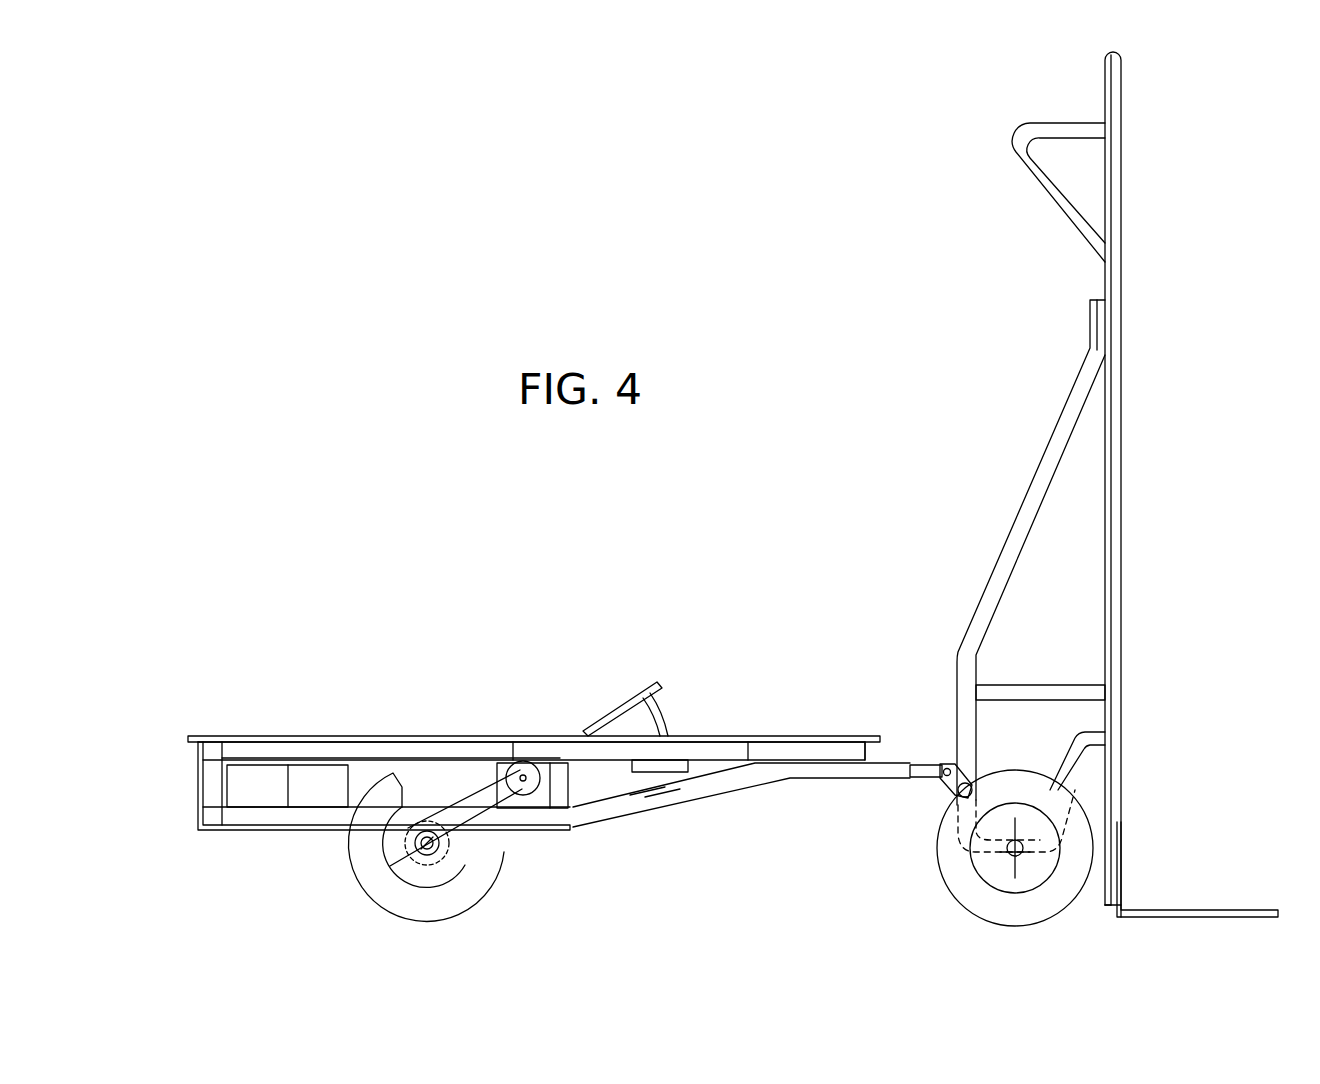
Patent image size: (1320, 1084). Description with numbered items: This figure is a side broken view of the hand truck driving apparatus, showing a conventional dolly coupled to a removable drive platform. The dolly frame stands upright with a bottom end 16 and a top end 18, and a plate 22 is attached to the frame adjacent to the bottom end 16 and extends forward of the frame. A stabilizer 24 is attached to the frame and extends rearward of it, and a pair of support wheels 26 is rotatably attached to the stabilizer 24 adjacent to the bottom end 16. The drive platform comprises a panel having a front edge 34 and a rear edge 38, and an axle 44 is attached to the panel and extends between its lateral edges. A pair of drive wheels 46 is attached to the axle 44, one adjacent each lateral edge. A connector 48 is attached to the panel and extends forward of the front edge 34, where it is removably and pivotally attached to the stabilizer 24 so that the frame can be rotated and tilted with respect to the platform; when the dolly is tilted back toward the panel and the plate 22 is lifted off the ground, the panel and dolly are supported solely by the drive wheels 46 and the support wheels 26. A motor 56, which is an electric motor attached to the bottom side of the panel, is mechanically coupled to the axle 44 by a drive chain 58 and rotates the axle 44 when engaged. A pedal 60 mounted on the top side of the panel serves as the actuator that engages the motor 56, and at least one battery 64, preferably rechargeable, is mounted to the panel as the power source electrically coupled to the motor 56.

The bottom end 16 is at (1108, 913).
The top end 18 is at (1106, 50).
The plate 22 is at (1226, 910).
The stabilizer 24 is at (992, 583).
The support wheels 26 is at (940, 870).
The front edge 34 is at (878, 736).
The rear edge 38 is at (188, 736).
The axle 44 is at (390, 896).
The drive wheels 46 is at (487, 898).
The connector 48 is at (935, 778).
The motor 56 is at (527, 812).
The drive chain 58 is at (432, 805).
The pedal 60 is at (602, 730).
The battery 64 is at (257, 782).